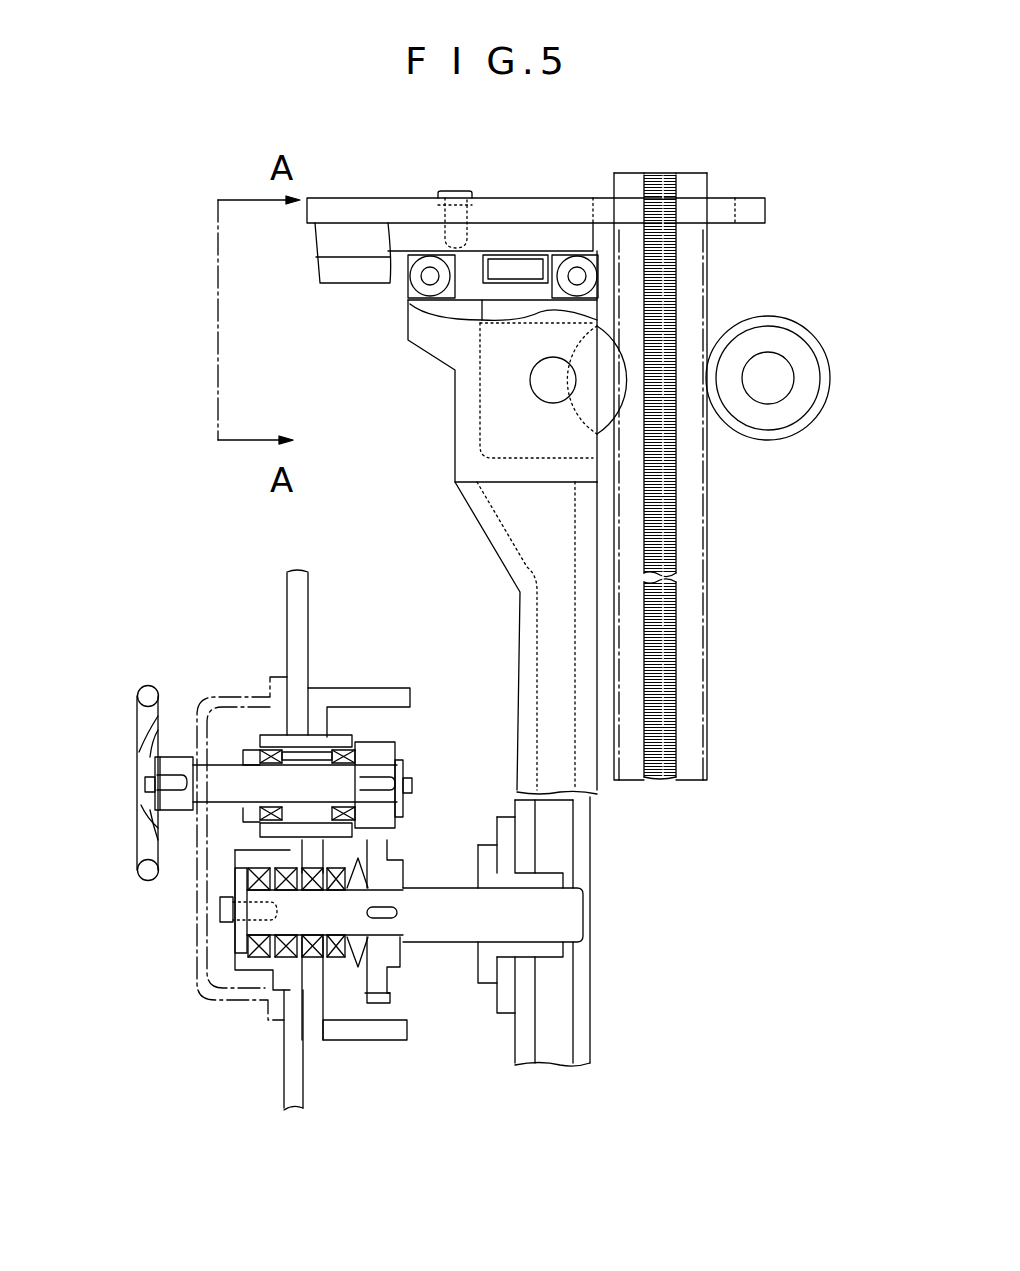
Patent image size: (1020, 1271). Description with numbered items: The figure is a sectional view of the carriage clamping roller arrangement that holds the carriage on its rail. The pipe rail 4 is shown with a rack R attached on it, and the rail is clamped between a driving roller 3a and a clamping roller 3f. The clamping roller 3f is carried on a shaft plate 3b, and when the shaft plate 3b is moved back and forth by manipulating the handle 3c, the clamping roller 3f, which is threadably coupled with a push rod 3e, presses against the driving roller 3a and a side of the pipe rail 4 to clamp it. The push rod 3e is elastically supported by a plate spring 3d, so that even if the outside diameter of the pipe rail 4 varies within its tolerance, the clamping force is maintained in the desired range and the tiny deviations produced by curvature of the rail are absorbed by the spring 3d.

The driving roller 3a is at (813, 377).
The shaft plate 3b is at (556, 577).
The handle 3c is at (140, 797).
The spring 3d is at (352, 967).
The push rod 3e is at (458, 928).
The clamping roller 3f is at (502, 385).
The rack R is at (670, 490).
The pipe rail 4 is at (692, 632).